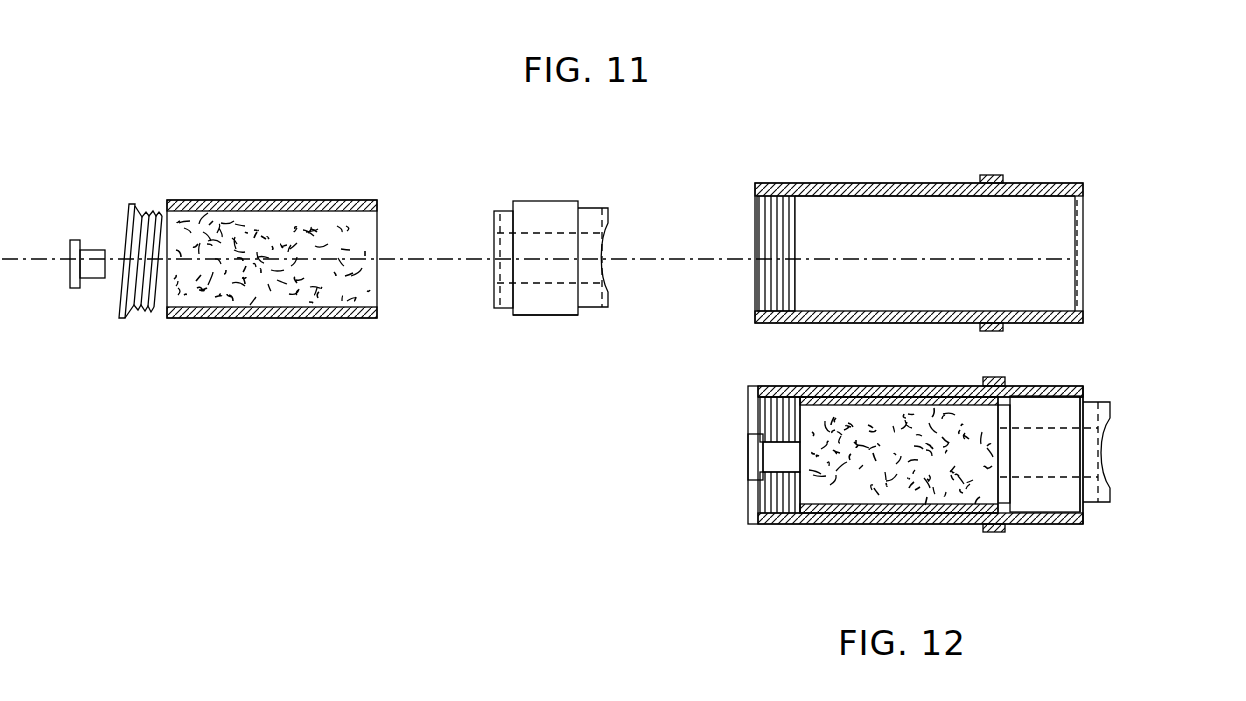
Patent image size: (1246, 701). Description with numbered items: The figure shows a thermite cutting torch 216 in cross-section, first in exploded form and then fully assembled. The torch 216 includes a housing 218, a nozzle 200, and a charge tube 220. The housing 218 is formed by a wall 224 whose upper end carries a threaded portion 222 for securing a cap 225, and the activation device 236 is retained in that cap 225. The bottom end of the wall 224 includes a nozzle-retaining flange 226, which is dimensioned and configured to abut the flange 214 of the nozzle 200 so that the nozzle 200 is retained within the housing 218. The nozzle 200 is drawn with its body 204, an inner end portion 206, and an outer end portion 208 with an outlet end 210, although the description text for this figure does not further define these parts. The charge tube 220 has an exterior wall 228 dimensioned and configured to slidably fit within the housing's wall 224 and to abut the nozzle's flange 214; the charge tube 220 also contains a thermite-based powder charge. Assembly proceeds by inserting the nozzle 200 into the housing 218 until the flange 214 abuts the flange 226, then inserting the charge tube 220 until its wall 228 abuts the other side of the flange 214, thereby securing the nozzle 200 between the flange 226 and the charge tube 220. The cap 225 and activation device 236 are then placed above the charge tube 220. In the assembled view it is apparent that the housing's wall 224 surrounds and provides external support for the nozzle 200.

In FIG. 11, the nozzle 200 is at (455, 119).
In FIG. 12, the nozzle 200 is at (1044, 492).
In FIG. 11, the fitting body 204 is at (555, 243).
In FIG. 12, the fitting body 204 is at (997, 455).
In FIG. 11, the fitting flange 206 is at (496, 245).
In FIG. 12, the fitting flange 206 is at (1004, 454).
In FIG. 11, the connector end 208 is at (604, 278).
In FIG. 12, the connector end 208 is at (1100, 428).
In FIG. 11, the connector 210 is at (610, 214).
In FIG. 12, the connector 210 is at (1106, 404).
In FIG. 11, the flange 214 is at (555, 309).
In FIG. 12, the flange 214 is at (1055, 418).
In FIG. 11, the thermite cutting torch 216 is at (476, 528).
In FIG. 11, the housing 218 is at (906, 105).
In FIG. 12, the housing 218 is at (834, 524).
In FIG. 11, the charge tube 220 is at (264, 155).
In FIG. 12, the charge tube 220 is at (870, 410).
In FIG. 11, the threaded portion 222 is at (757, 193).
In FIG. 12, the threaded portion 222 is at (780, 455).
In FIG. 11, the wall 224 is at (848, 183).
In FIG. 12, the wall 224 is at (916, 525).
In FIG. 11, the cap 225 is at (152, 214).
In FIG. 12, the cap 225 is at (750, 410).
In FIG. 11, the nozzle-retaining flange 226 is at (1070, 202).
In FIG. 12, the nozzle-retaining flange 226 is at (1083, 390).
In FIG. 11, the exterior wall 228 is at (240, 318).
In FIG. 12, the exterior wall 228 is at (878, 501).
In FIG. 11, the activation device 236 is at (102, 250).
In FIG. 12, the activation device 236 is at (758, 456).